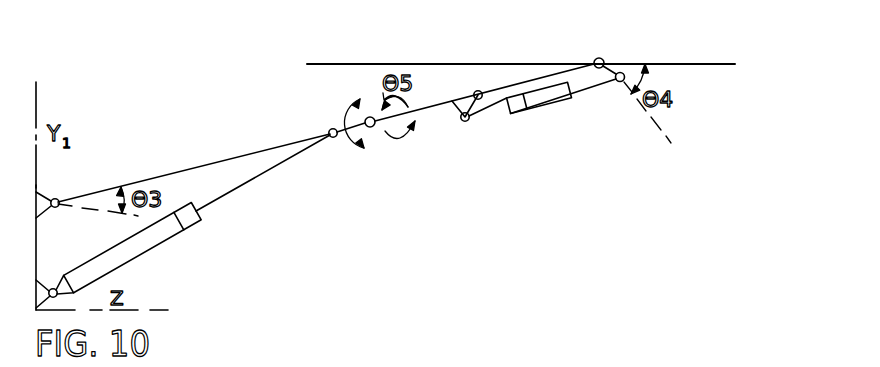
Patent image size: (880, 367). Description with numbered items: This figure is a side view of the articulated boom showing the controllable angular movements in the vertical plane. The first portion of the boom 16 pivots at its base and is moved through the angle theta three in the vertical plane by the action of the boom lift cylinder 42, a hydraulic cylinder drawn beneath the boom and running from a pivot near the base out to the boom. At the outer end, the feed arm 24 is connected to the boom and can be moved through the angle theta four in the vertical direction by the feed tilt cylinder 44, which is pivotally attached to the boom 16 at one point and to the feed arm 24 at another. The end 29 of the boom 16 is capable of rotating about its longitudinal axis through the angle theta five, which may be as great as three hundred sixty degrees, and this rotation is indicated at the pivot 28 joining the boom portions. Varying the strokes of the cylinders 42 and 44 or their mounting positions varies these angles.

The first portion of the boom 16 is at (231, 158).
The feed arm 24 is at (505, 63).
The pivot pin 28 is at (375, 127).
The end of boom 29 is at (424, 108).
The boom lift cylinder 42 is at (151, 249).
The feed tilt cylinder 44 is at (543, 104).